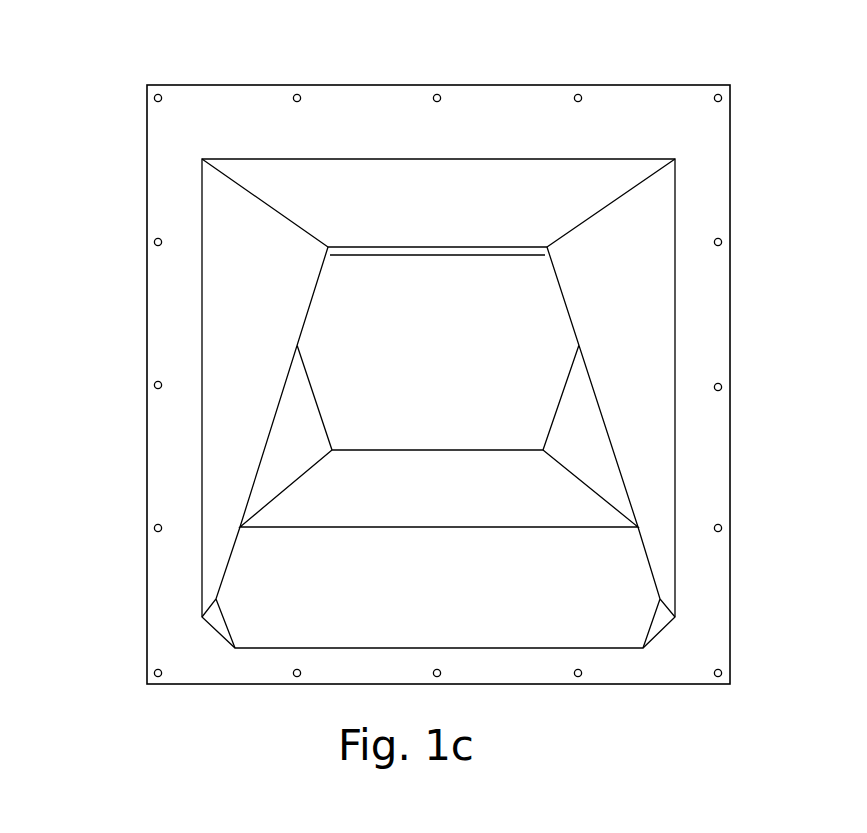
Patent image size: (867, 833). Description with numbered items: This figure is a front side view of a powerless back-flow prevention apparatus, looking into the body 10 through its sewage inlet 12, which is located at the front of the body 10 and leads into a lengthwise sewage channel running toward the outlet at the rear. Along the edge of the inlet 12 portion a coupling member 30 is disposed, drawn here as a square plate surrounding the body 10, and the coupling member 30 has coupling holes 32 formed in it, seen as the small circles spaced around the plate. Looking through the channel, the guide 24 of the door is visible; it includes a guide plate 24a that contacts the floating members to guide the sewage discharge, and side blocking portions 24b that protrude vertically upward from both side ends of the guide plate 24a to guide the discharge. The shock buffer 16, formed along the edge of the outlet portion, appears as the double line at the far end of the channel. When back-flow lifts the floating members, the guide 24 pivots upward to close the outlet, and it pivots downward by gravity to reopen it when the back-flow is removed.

The body 10 is at (475, 200).
The sewage inlet 12 is at (610, 307).
The shock buffer 16 is at (510, 247).
The guide 24 is at (350, 447).
The guide plate 24a is at (303, 507).
The side blocking portions 24b is at (283, 440).
The coupling member 30 is at (235, 103).
The coupling holes 32 is at (154, 243).